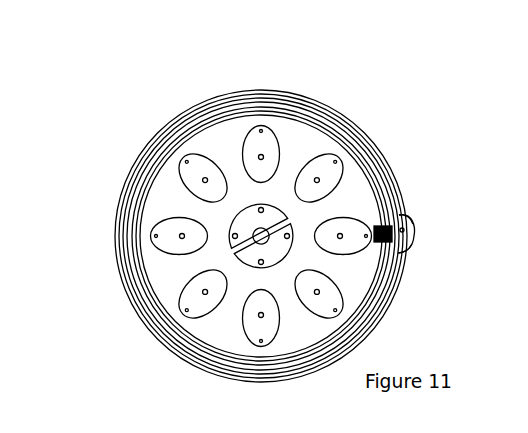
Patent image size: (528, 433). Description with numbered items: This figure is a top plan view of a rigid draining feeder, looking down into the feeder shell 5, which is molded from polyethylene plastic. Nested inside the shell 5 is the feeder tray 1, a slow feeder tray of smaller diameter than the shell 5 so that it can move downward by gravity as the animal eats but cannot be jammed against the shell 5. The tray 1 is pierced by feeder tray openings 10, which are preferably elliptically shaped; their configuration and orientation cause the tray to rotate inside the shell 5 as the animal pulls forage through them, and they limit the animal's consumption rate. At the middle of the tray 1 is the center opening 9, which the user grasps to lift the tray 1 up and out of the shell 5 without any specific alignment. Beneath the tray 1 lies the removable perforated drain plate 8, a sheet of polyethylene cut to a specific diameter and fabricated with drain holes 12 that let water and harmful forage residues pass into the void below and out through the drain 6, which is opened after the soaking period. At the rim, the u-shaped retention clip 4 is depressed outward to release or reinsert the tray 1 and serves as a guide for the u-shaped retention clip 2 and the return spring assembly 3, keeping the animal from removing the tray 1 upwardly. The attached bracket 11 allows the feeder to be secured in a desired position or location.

The feeder tray 1 is at (360, 203).
The u shaped retention clip 2 is at (375, 221).
The return spring assembly 3 is at (404, 222).
The u-shaped retention clip 4 is at (378, 222).
The feeder shell 5 is at (122, 172).
The drain 6 is at (413, 222).
The removable perforated drain plate 8 is at (236, 233).
The center opening 9 is at (241, 257).
The feeder tray openings 10 is at (240, 336).
The bracket 11 is at (416, 248).
The drain holes 12 is at (204, 181).